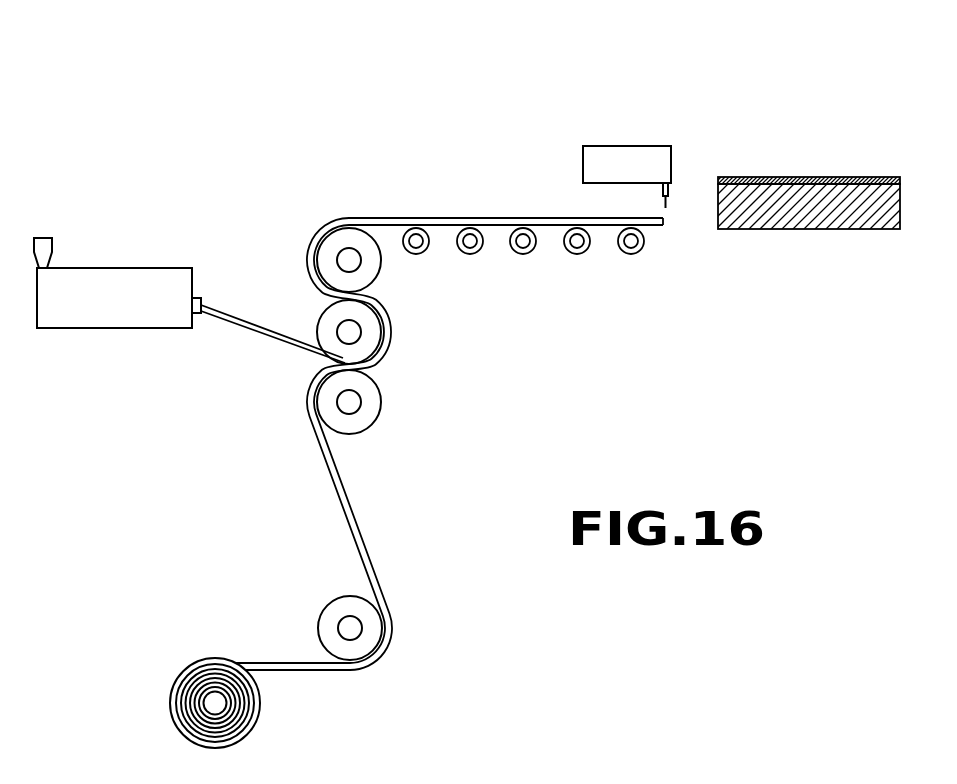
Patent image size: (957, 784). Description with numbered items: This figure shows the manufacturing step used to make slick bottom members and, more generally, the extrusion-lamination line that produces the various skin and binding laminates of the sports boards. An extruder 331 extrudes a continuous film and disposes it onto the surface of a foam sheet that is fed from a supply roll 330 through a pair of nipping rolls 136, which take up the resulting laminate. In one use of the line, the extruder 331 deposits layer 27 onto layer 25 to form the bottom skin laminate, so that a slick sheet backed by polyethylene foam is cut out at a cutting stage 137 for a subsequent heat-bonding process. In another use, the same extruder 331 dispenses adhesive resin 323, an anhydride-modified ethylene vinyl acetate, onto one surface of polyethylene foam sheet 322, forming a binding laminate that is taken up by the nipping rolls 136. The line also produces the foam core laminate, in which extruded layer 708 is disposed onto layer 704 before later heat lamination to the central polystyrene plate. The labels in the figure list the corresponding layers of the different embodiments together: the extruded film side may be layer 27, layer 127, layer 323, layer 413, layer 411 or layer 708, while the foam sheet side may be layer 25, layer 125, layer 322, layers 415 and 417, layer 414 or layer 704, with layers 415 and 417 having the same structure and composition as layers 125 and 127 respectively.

The layer 27 is at (553, 183).
The layer 127 is at (553, 197).
The adhesive resin 323 is at (553, 211).
The layer 413 is at (553, 226).
The layer 411 is at (553, 240).
The layer 708 is at (237, 318).
The layer 25 is at (586, 427).
The layer 125 is at (586, 427).
The polyethylene foam sheet 322 is at (586, 427).
The layer 415 is at (586, 427).
The layer 417 is at (586, 427).
The layer 414 is at (586, 427).
The layer 704 is at (353, 508).
The extruder 331 is at (91, 275).
The cutting stage 137 is at (620, 153).
The nipping rolls 136 is at (370, 335).
The supply roll of web 330 is at (258, 712).